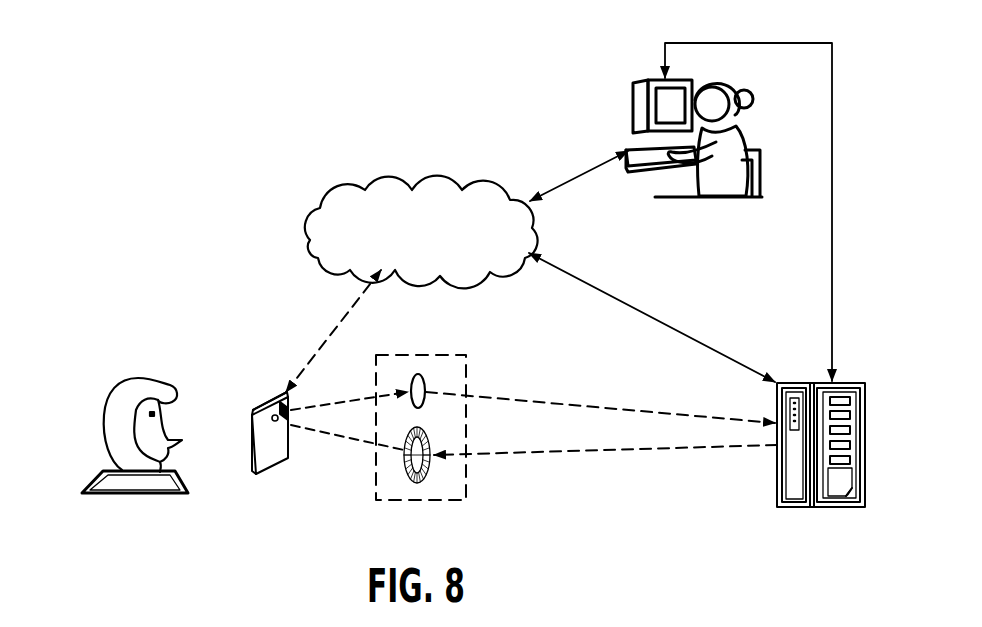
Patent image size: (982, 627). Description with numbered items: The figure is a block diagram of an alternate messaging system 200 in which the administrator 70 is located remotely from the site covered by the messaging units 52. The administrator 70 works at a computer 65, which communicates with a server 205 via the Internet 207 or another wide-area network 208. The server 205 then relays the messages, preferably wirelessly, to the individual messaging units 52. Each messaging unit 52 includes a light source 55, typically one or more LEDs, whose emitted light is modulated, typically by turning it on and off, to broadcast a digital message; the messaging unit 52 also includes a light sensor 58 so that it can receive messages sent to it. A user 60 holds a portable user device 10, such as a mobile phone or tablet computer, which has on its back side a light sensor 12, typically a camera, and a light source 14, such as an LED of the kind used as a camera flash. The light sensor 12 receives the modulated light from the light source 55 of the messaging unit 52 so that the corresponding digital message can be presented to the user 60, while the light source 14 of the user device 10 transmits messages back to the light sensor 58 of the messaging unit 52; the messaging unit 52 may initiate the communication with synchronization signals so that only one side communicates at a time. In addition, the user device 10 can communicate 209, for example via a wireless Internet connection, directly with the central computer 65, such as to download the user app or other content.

The system 200 is at (196, 133).
The Internet 207 is at (361, 188).
The communication 209 is at (333, 335).
The computer 65 is at (645, 80).
The administrator 70 is at (746, 150).
The wide-area network 208 is at (832, 280).
The server 205 is at (831, 508).
The user 60 is at (137, 380).
The user device 10 is at (273, 475).
The light sensor 12 is at (271, 419).
The light source 14 is at (283, 397).
The messaging unit 52 is at (400, 500).
The light sensor 58 is at (418, 374).
The light source 55 is at (428, 470).